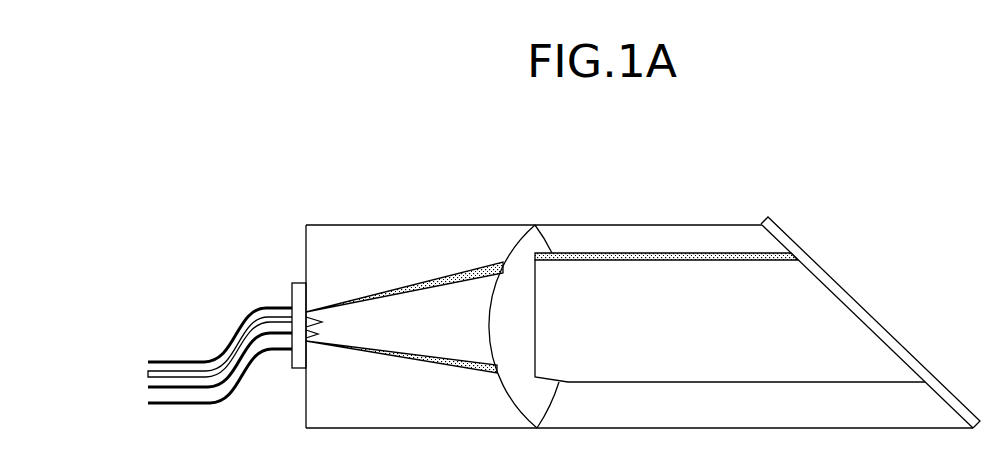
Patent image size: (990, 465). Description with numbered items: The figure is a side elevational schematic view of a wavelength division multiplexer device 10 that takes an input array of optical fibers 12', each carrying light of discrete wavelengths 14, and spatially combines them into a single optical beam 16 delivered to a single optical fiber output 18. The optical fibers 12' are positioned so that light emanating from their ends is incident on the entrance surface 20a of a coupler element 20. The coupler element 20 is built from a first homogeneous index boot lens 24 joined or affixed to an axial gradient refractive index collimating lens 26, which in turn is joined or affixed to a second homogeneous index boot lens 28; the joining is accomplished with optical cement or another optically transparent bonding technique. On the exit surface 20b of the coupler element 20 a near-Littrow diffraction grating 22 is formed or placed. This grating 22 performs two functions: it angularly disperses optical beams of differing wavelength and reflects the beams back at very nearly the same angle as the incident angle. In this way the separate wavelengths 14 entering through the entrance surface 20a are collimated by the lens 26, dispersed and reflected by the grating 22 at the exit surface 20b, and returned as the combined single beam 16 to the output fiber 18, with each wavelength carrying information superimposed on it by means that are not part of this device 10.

The wavelength division multiplexer device 10 is at (743, 198).
The optical fiber 12' is at (199, 333).
The discrete wavelengths of light 14 is at (340, 303).
The single optical beam 16 is at (398, 318).
The single optical fiber output 18 is at (165, 375).
The coupler element 20 is at (503, 195).
The entrance surface 20a is at (304, 238).
The exit surface 20b is at (887, 343).
The near-Littrow diffraction grating 22 is at (823, 278).
The first homogeneous index boot lens 24 is at (438, 247).
The axial gradient refractive index collimating lens 26 is at (537, 243).
The second homogeneous index boot lens 28 is at (682, 250).